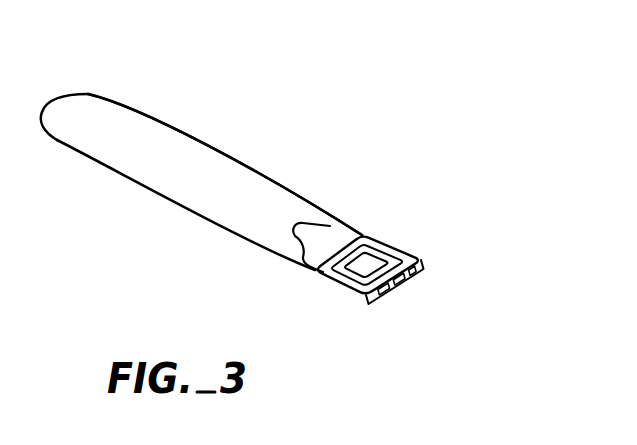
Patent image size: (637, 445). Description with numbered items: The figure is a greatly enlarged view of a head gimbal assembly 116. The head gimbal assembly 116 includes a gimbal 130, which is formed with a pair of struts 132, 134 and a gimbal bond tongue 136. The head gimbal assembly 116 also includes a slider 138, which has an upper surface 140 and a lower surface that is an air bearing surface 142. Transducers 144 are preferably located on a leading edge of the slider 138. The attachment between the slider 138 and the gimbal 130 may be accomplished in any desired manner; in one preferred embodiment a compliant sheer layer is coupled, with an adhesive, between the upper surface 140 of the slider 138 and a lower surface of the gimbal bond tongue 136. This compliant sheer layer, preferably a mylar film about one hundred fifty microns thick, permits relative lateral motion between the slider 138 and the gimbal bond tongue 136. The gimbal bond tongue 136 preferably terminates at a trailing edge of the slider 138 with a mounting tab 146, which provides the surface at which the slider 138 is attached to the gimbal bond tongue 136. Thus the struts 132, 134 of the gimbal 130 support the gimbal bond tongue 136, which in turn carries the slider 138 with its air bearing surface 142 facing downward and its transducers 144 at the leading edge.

The head gimbal assembly 116 is at (266, 75).
The gimbal 130 is at (154, 105).
The strut 132 is at (318, 277).
The strut 134 is at (383, 250).
The gimbal bond tongue 136 is at (340, 284).
The slider 138 is at (406, 306).
The upper surface 140 is at (393, 257).
The air bearing surface 142 is at (364, 300).
The transducers 144 is at (419, 289).
The mounting tab 146 is at (337, 250).